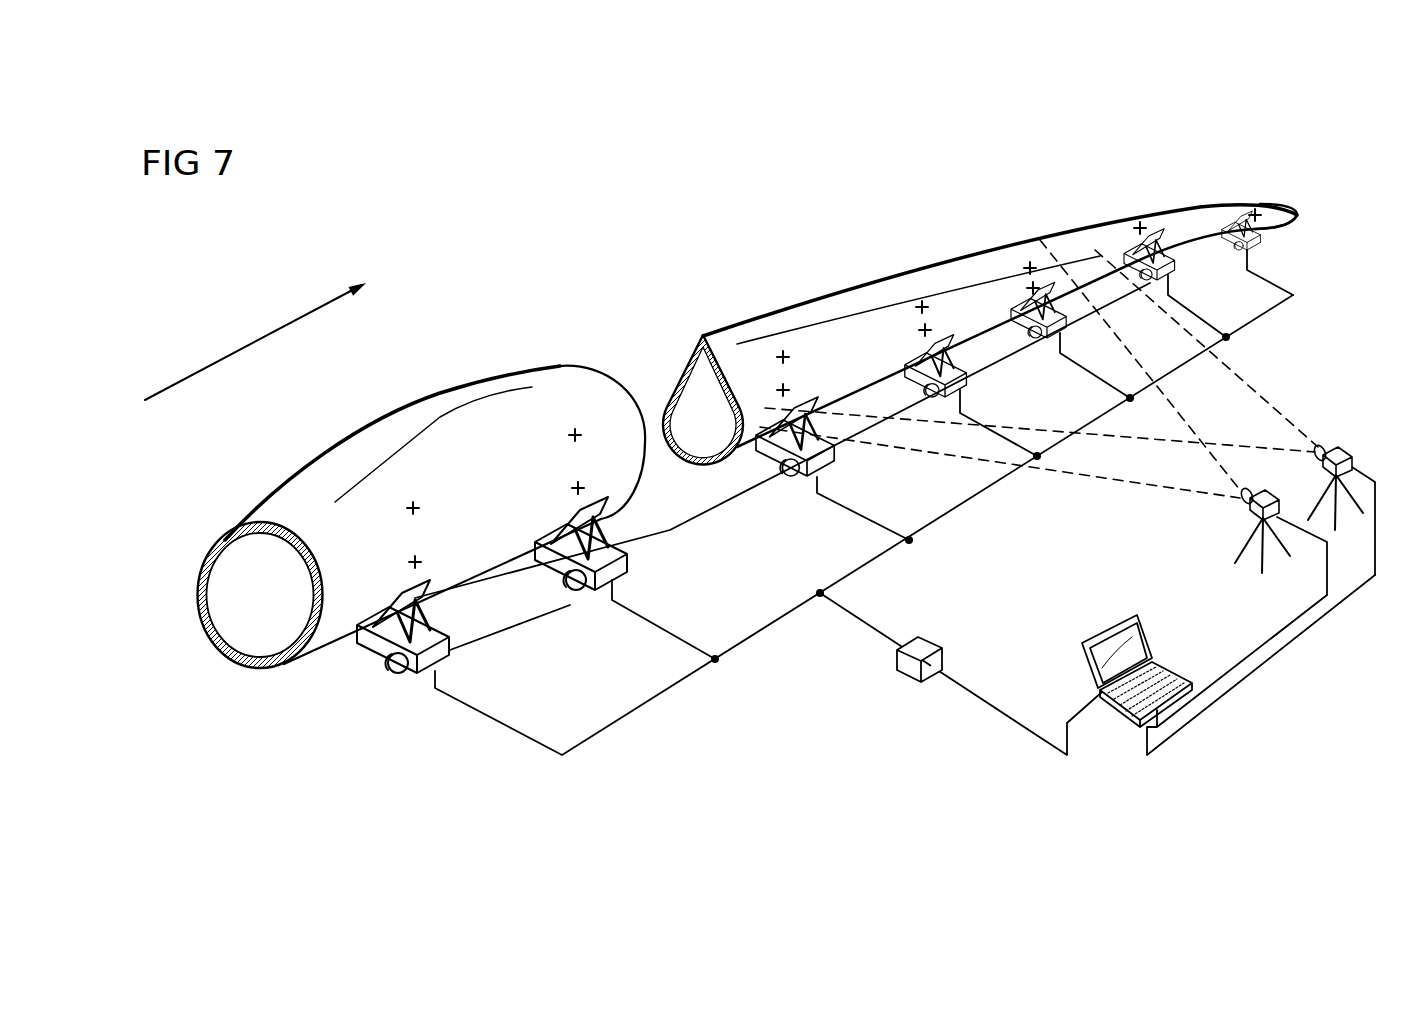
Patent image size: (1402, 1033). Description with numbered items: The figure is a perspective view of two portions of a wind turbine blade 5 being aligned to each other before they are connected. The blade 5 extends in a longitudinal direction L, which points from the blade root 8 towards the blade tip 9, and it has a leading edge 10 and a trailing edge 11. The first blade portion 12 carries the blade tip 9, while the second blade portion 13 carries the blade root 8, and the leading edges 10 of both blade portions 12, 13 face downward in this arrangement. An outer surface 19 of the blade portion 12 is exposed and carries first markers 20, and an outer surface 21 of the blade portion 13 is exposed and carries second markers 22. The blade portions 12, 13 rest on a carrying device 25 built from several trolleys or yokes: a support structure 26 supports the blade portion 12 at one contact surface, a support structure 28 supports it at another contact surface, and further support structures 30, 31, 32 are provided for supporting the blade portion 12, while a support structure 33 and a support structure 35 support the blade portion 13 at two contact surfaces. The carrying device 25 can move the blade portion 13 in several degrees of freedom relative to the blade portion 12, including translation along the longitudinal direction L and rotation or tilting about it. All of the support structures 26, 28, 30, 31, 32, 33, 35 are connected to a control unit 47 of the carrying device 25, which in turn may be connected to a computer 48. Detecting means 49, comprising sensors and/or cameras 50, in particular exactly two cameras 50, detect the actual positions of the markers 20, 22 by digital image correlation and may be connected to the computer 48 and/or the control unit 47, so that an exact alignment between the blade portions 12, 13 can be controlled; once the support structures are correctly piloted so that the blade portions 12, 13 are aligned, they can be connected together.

The wind turbine blade 5 is at (770, 212).
The blade root 8 is at (218, 544).
The blade tip 9 is at (1290, 212).
The leading edge 10 is at (485, 578).
The trailing edge 11 is at (353, 440).
The blade portion 12 is at (987, 301).
The blade portion 13 is at (412, 478).
The outer surface 19 is at (818, 326).
The markers 20 is at (790, 390).
The outer surface 21 is at (505, 402).
The markers 22 is at (570, 487).
The carrying device 25 is at (379, 671).
The support structure 26 is at (832, 455).
The support structure 28 is at (970, 382).
The support structure 30 is at (1070, 325).
The support structure 31 is at (1175, 265).
The support structure 32 is at (1256, 246).
The support structure 33 is at (628, 557).
The support structure 35 is at (370, 645).
The control unit 47 is at (905, 660).
The computer 48 is at (1107, 625).
The detecting means 49 is at (1079, 406).
The cameras 50 is at (1352, 452).
The longitudinal direction L is at (237, 348).